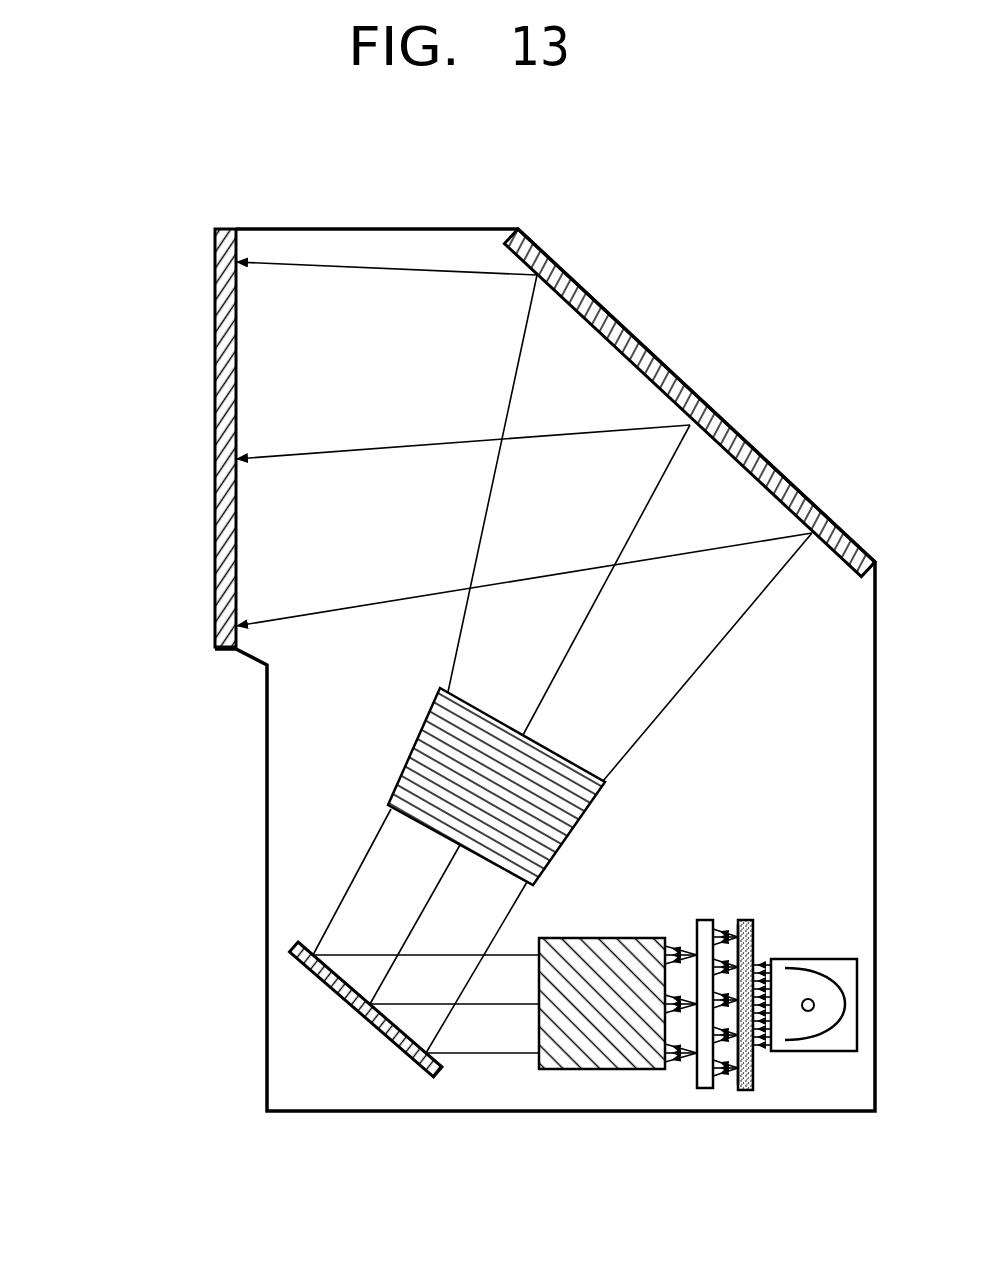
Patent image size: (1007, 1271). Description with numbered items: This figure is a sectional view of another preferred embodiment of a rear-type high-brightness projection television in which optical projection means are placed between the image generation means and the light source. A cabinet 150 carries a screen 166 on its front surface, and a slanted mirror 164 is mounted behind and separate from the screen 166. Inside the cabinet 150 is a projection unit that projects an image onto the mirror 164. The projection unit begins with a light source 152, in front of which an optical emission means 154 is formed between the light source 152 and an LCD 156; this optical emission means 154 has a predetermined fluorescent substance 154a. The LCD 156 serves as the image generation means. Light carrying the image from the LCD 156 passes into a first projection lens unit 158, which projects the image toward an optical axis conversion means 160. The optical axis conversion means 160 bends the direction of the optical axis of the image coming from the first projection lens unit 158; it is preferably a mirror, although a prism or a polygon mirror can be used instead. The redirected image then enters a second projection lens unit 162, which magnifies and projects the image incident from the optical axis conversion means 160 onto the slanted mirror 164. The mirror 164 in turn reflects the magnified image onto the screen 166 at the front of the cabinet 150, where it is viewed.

The cabinet 150 is at (265, 902).
The light source 152 is at (832, 1051).
The optical emission means 154 is at (745, 920).
The fluorescent substance 154a is at (746, 1090).
The LCD 156 is at (703, 920).
The first projection lens unit 158 is at (577, 1069).
The optical axis conversion means 160 is at (383, 1032).
The second projection lens unit 162 is at (428, 750).
The slanted mirror 164 is at (730, 420).
The screen 166 is at (215, 552).